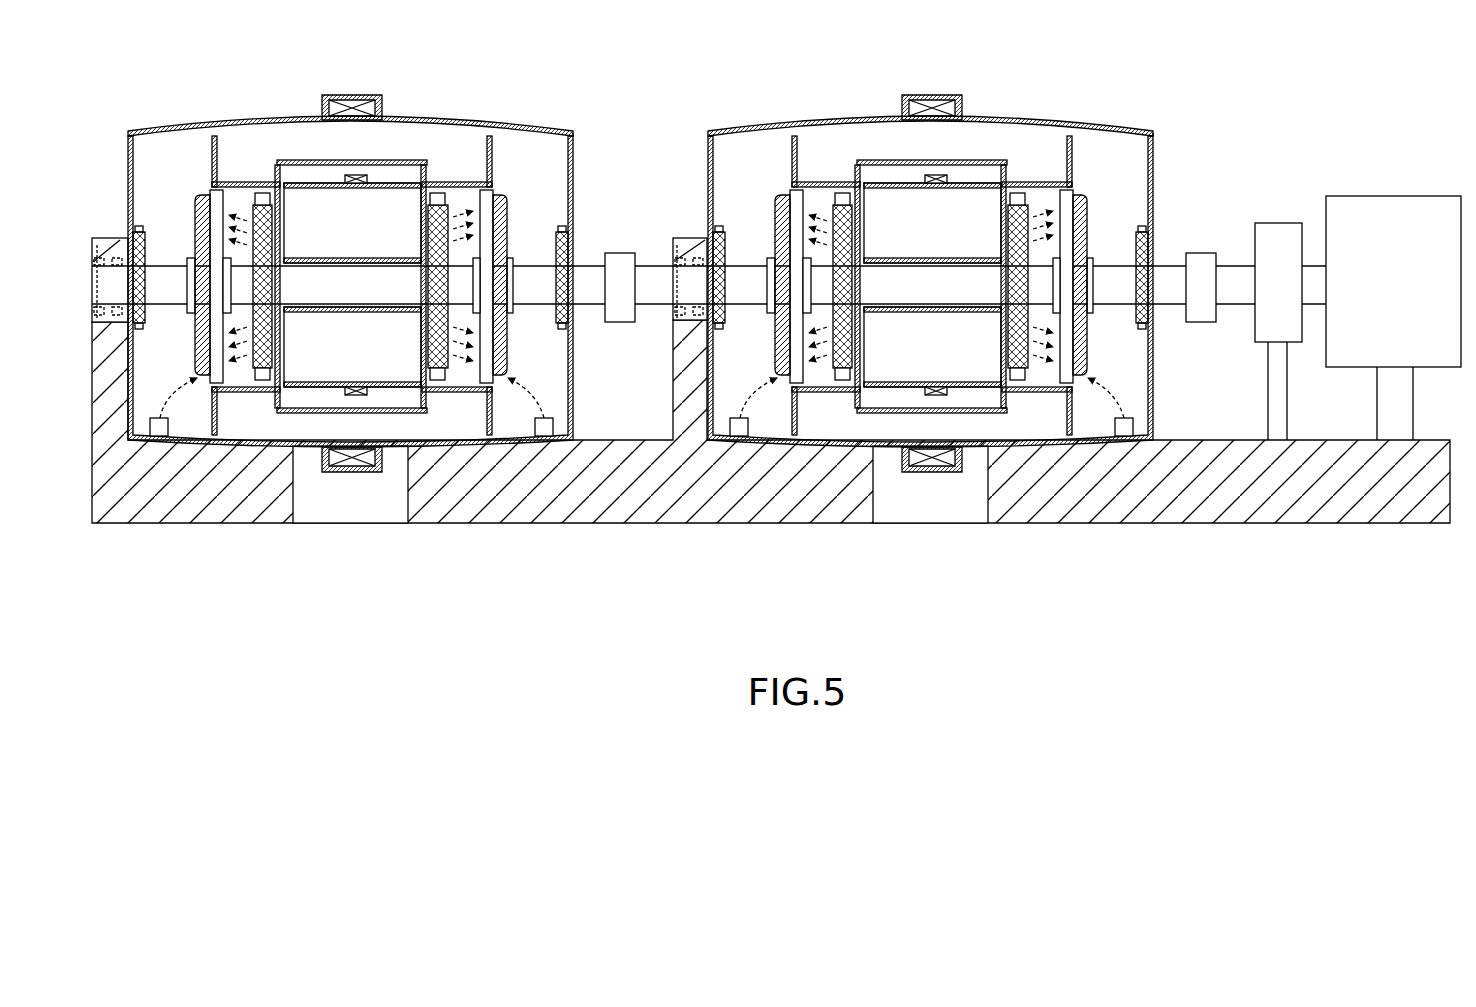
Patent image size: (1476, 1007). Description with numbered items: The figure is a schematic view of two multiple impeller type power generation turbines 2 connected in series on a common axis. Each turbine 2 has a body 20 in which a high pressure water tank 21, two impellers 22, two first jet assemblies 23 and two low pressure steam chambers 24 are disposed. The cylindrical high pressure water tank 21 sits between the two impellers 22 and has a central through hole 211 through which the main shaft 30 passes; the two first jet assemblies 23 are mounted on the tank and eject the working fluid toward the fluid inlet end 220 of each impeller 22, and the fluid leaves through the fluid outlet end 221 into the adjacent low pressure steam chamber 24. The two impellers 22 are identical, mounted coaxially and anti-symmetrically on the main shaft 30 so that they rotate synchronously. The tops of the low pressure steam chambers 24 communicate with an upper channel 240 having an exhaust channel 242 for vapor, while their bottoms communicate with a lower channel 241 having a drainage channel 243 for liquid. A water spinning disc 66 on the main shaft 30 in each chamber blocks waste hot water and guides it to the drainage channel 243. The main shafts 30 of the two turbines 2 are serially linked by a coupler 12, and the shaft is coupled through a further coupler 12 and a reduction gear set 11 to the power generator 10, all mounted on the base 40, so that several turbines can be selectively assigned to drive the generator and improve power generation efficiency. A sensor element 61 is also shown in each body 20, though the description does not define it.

The multiple impeller type power generation turbine 2 is at (620, 130).
The power generator 10 is at (1400, 215).
The reduction gear set 11 is at (1272, 235).
The coupler 12 is at (620, 262).
The body 20 is at (574, 172).
The high pressure water tank 21 is at (382, 205).
The impeller 22 is at (218, 193).
The first jet assembly 23 is at (262, 197).
The low pressure steam chamber 24 is at (157, 155).
The main shaft 30 is at (1225, 278).
The base 40 is at (1322, 510).
The sensor 61 is at (168, 427).
The water spinning disc 66 is at (140, 232).
The through hole 211 is at (297, 263).
The fluid inlet end 220 is at (229, 190).
The fluid outlet end 221 is at (197, 210).
The upper channel 240 is at (408, 143).
The lower channel 241 is at (297, 430).
The exhaust channel 242 is at (355, 108).
The drainage channel 243 is at (355, 462).